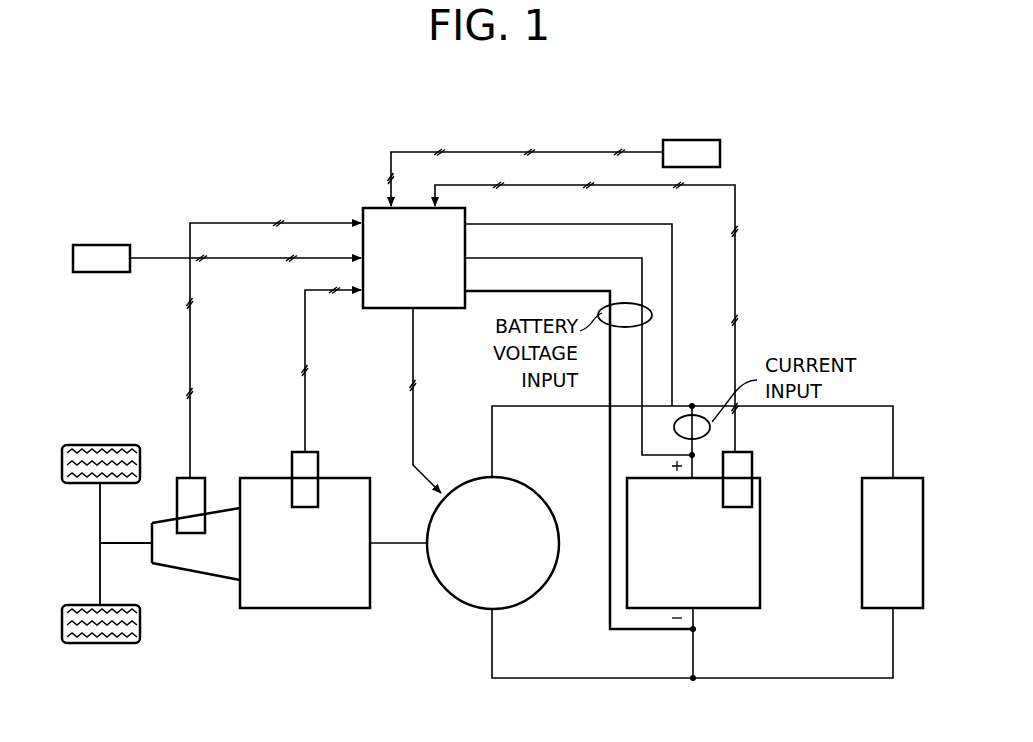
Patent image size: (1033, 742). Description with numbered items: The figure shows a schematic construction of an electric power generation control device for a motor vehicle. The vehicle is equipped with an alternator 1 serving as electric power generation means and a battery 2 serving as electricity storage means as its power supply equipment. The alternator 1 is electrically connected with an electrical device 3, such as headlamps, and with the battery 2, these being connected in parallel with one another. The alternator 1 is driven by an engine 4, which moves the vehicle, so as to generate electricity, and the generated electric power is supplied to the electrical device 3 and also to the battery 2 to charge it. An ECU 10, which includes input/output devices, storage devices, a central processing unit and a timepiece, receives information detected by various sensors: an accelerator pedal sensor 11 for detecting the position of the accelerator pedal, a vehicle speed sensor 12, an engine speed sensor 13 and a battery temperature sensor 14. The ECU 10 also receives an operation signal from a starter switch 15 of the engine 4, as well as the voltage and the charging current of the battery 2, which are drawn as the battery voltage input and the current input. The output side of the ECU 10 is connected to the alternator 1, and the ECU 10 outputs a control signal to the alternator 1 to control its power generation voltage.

The alternator 1 is at (445, 593).
The battery 2 is at (760, 571).
The electrical device 3 is at (862, 508).
The engine 4 is at (275, 610).
The ECU 10 is at (380, 308).
The accelerator pedal sensor 11 is at (107, 245).
The vehicle speed sensor 12 is at (195, 478).
The engine speed sensor 13 is at (305, 452).
The battery temperature sensor 14 is at (757, 463).
The starter switch 15 is at (720, 153).